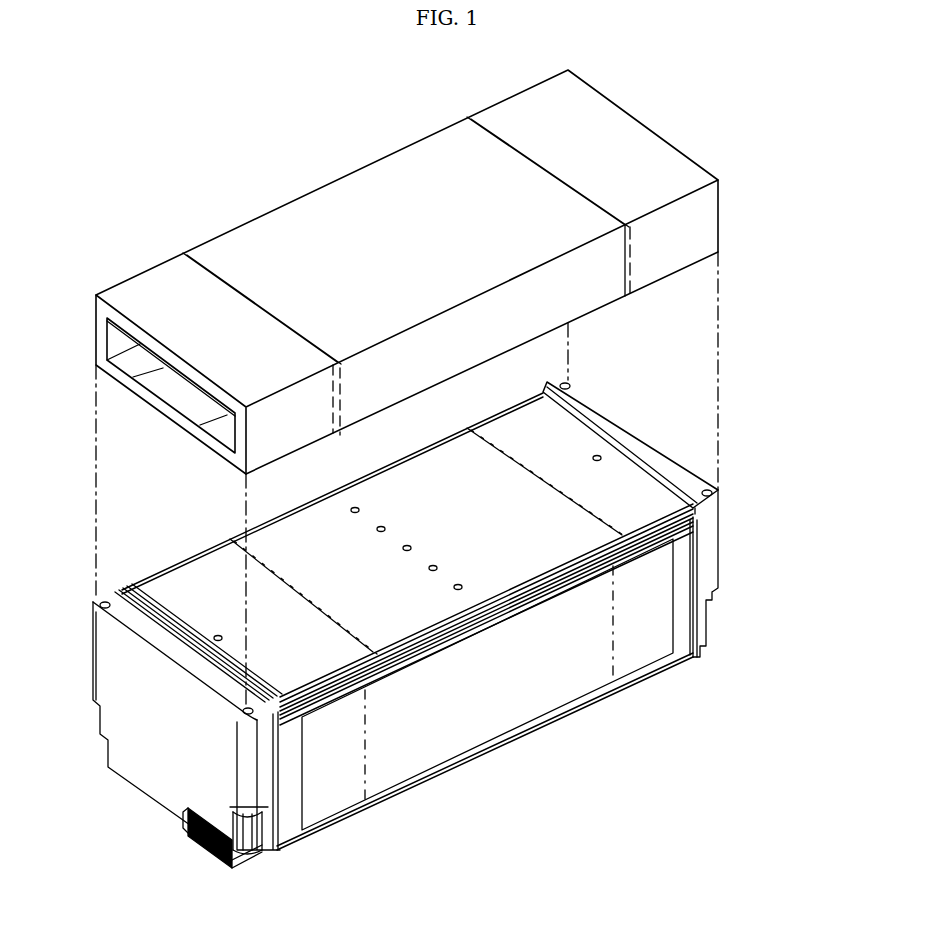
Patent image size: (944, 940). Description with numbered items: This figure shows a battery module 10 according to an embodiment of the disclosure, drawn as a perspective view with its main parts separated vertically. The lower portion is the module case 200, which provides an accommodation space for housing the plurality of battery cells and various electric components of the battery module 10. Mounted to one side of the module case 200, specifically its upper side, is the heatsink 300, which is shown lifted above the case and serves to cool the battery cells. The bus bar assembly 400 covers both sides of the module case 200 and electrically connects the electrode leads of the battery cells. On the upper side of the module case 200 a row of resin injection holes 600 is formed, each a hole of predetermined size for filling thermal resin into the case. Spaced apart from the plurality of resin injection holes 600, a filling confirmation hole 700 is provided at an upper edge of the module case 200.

The battery module 10 is at (241, 152).
The module case 200 is at (512, 762).
The heatsink 300 is at (692, 131).
The bus bar assembly 400 is at (740, 495).
The resin injection hole 600 is at (404, 506).
The filling confirmation hole 700 is at (599, 455).